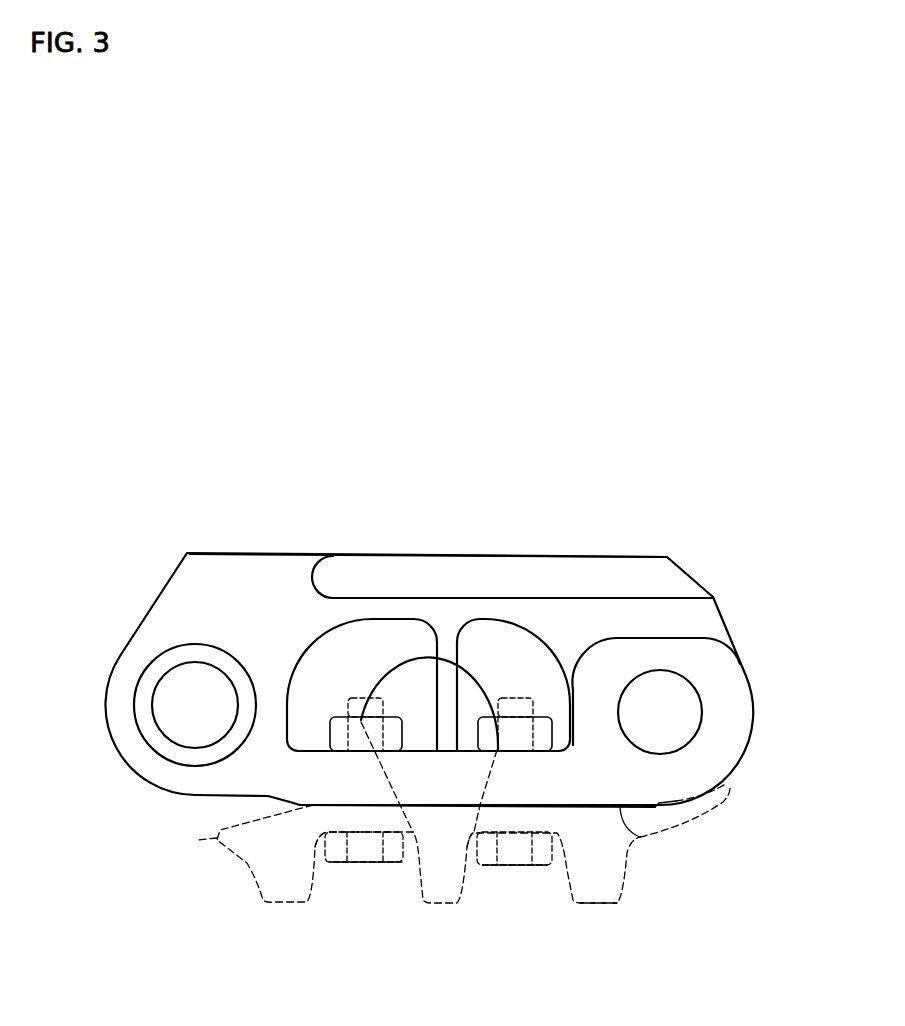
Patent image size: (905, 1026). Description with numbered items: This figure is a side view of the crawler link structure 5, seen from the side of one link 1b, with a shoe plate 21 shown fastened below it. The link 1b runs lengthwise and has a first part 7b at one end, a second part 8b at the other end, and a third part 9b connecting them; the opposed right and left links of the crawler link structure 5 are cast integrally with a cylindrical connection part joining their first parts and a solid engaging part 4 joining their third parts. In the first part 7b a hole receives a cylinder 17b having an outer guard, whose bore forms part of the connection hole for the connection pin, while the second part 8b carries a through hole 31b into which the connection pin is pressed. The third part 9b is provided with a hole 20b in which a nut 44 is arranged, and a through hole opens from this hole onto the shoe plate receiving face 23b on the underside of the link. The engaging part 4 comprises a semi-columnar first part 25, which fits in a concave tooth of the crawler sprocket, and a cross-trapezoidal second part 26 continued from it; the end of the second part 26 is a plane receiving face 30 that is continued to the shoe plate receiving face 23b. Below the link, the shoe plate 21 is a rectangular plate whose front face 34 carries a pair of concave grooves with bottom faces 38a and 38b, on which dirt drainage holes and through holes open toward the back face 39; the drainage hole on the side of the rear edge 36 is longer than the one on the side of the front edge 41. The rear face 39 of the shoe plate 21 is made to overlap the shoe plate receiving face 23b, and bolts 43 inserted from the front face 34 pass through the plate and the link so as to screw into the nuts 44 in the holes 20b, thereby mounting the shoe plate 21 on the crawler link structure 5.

The link 1b is at (357, 552).
The engaging part 4 is at (369, 679).
The crawler link structure 5 is at (543, 541).
The first part 7b is at (223, 585).
The second part 8b is at (717, 672).
The third part 9b is at (500, 787).
The cylinder 17b is at (145, 718).
The hole 20b is at (287, 707).
The shoe plate 21 is at (236, 873).
The shoe plate receiving face 23b is at (643, 838).
The first part of engaging part 25 is at (417, 657).
The second part of engaging part 26 is at (432, 778).
The receiving face 30 is at (457, 808).
The through hole 31b is at (697, 722).
The front face 34 is at (597, 907).
The rear edge 36 is at (727, 783).
The bottom face 38a is at (378, 864).
The bottom face 38b is at (547, 870).
The rear face 39 is at (575, 803).
The front edge 41 is at (197, 840).
The bolt 43 is at (332, 863).
The nut 44 is at (395, 728).